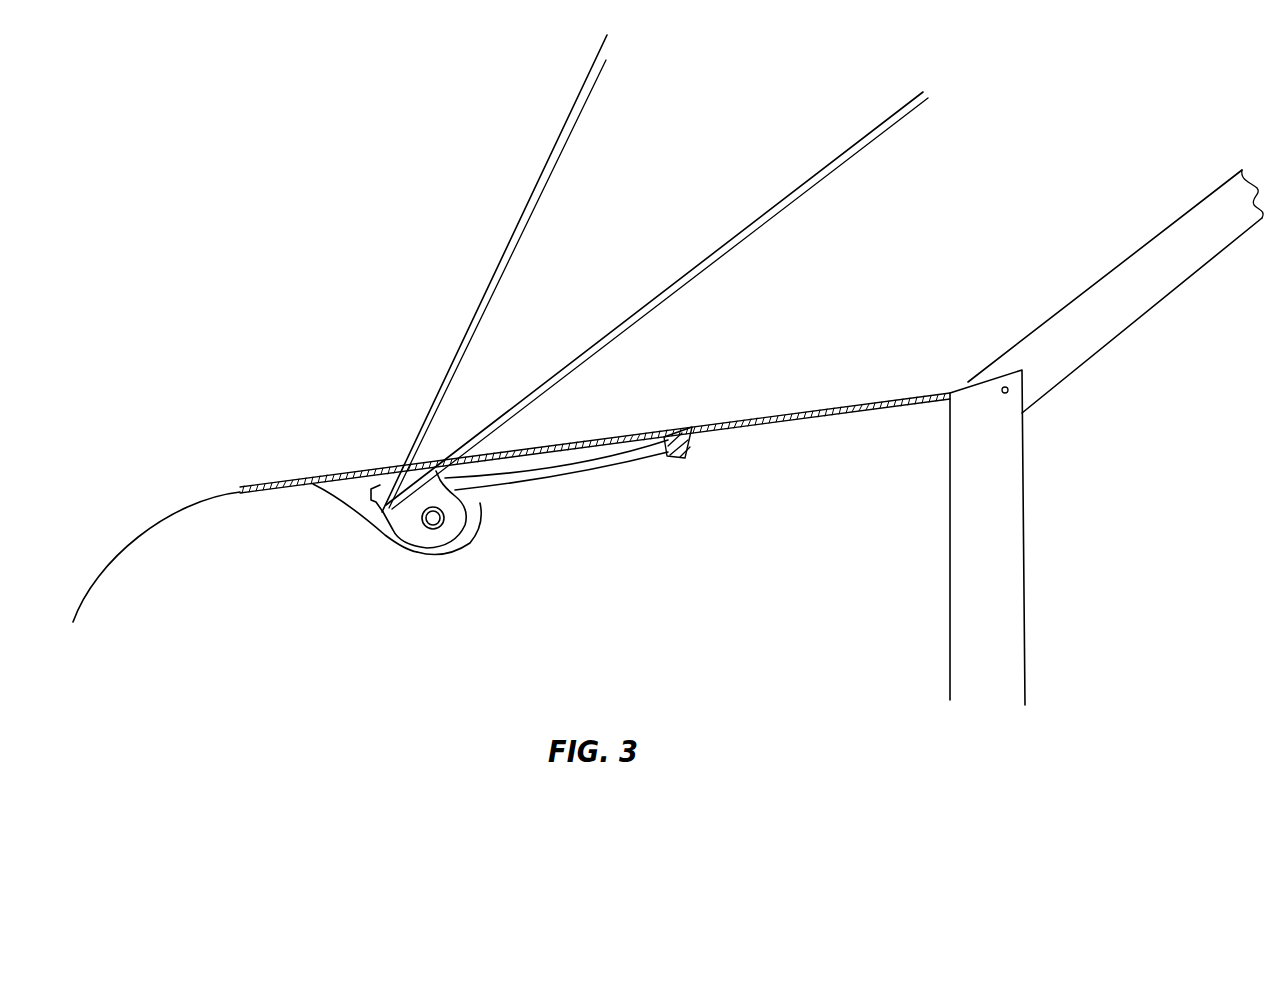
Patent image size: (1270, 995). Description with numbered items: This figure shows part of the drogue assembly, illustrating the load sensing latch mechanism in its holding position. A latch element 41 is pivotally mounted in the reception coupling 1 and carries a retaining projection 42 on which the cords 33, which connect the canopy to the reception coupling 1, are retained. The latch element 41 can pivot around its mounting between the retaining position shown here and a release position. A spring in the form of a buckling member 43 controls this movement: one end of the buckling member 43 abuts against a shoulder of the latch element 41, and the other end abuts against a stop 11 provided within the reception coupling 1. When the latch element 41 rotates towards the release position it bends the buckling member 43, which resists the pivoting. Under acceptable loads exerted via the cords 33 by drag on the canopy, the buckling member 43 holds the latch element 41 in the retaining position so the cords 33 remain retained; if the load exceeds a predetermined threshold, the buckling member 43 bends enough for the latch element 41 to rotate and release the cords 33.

The reception coupling 1 is at (805, 580).
The stop 11 is at (683, 456).
The cords 33 is at (715, 253).
The latch element 41 is at (428, 538).
The retaining projection 42 is at (377, 491).
The buckling member 43 is at (593, 458).